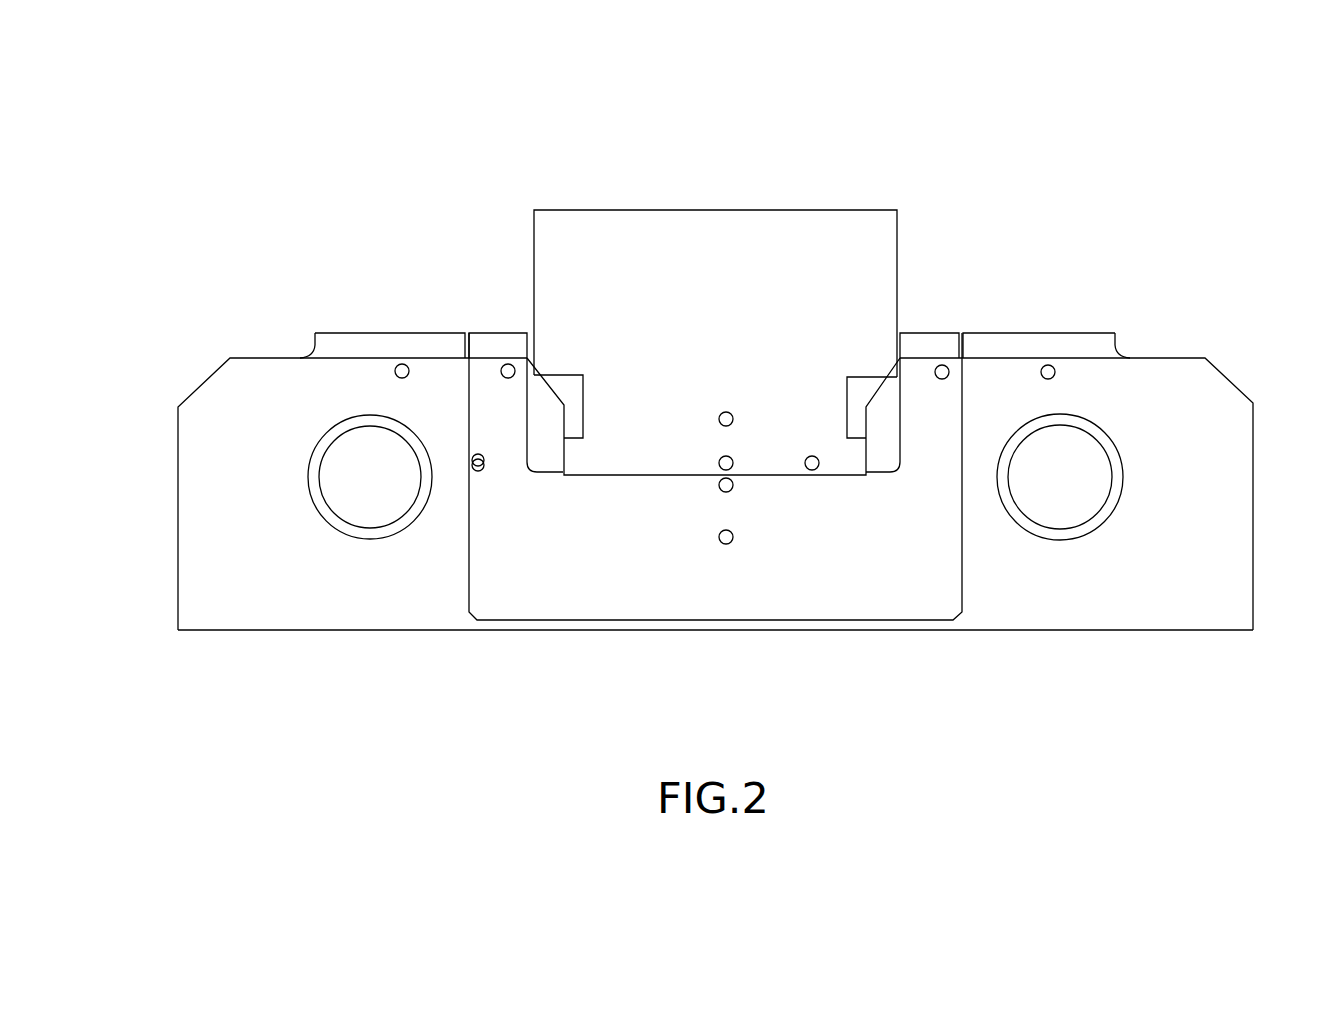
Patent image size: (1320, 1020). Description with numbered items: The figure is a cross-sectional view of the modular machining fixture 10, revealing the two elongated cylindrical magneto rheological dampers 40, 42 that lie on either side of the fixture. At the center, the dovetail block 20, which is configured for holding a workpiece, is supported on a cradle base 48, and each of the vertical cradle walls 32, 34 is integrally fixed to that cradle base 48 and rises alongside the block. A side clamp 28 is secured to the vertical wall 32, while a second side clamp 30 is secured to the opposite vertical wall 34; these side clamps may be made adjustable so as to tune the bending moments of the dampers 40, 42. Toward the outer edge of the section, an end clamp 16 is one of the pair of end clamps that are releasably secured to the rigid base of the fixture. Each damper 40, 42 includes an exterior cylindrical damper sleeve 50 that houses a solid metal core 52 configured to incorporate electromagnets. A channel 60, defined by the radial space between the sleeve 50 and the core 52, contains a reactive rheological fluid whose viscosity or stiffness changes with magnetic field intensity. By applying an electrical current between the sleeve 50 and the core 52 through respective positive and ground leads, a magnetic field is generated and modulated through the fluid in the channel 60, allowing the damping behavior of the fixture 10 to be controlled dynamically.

The modular machining fixture 10 is at (230, 190).
The end clamp 16 is at (1223, 470).
The dovetail block 20 is at (724, 344).
The side clamp 28 is at (389, 343).
The side clamp 30 is at (1042, 345).
The cradle wall 32 is at (500, 343).
The cradle wall 34 is at (929, 345).
The magneto rheological damper 40 is at (300, 499).
The magneto rheological damper 42 is at (1122, 508).
The cradle base 48 is at (726, 591).
The damper sleeve 50 is at (362, 533).
The core 52 is at (383, 489).
The channel 60 is at (318, 465).